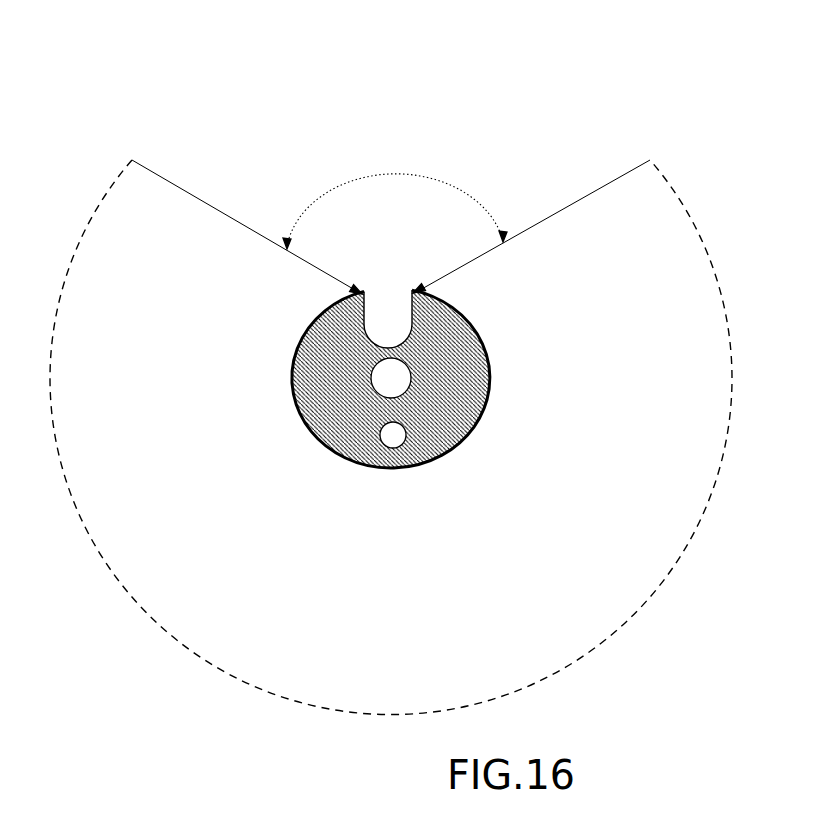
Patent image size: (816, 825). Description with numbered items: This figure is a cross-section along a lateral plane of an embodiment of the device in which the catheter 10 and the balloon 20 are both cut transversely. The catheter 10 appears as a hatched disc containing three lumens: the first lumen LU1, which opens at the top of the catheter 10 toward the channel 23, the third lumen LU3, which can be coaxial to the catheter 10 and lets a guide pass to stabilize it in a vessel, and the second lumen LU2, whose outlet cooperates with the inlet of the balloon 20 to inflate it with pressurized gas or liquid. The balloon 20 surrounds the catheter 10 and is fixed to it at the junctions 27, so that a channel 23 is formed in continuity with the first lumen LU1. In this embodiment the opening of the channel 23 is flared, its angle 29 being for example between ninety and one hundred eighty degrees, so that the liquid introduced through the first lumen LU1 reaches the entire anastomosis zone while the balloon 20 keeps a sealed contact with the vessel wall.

The catheter 10 is at (313, 410).
The balloon 20 is at (628, 585).
The channel 23 is at (418, 98).
The junctions 27 is at (413, 292).
The angle 29 is at (342, 177).
The first lumen LU1 is at (378, 328).
The second lumen LU2 is at (398, 440).
The third lumen LU3 is at (398, 372).